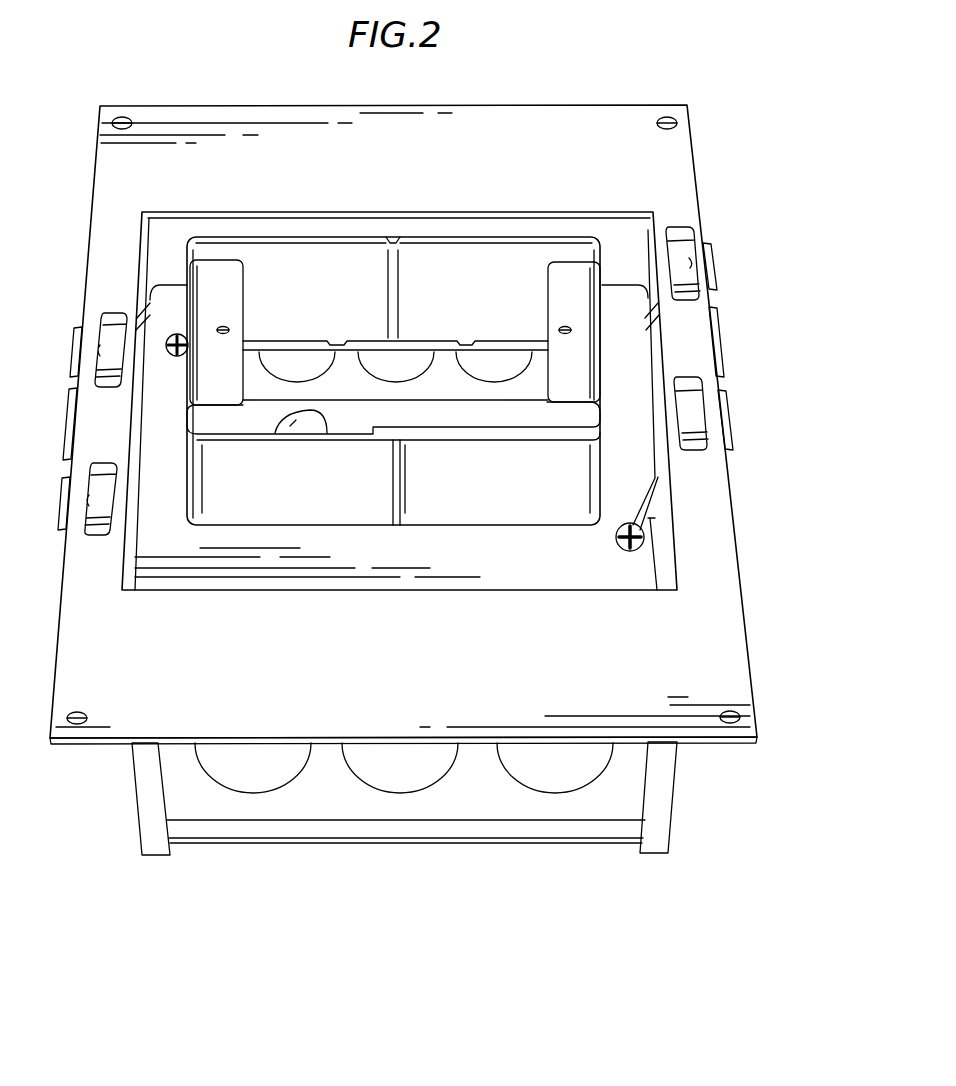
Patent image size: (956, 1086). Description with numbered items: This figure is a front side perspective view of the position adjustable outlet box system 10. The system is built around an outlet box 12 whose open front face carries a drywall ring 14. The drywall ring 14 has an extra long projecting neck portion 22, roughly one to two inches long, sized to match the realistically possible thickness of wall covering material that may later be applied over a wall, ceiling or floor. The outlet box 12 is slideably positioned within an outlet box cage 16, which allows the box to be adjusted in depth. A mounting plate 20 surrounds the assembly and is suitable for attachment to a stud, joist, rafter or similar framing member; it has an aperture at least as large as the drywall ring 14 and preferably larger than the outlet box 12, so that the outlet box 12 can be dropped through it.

The position adjustable outlet box system 10 is at (745, 170).
The outlet box 12 is at (483, 803).
The drywall ring 14 is at (632, 360).
The outlet box cage 16 is at (675, 797).
The mounting plate 20 is at (718, 677).
The projecting neck portion 22 is at (565, 470).